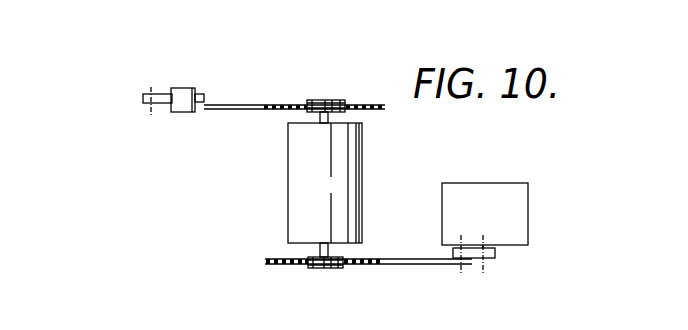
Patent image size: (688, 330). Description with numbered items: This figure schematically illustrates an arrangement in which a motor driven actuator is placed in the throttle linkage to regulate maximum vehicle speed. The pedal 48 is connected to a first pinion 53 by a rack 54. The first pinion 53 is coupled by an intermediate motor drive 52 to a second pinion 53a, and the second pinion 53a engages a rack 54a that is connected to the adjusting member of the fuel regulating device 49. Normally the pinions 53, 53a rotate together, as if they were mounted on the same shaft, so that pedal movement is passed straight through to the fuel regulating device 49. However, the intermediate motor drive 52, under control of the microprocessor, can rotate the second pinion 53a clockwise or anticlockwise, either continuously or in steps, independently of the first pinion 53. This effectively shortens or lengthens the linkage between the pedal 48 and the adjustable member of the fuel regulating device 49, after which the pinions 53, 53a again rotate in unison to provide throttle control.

The pedal 48 is at (162, 94).
The fuel regulating device 49 is at (478, 187).
The intermediate motor drive 52 is at (297, 160).
The first pinion 53 is at (333, 100).
The second pinion 53a is at (328, 268).
The rack 54 is at (245, 105).
The rack 54a is at (298, 267).